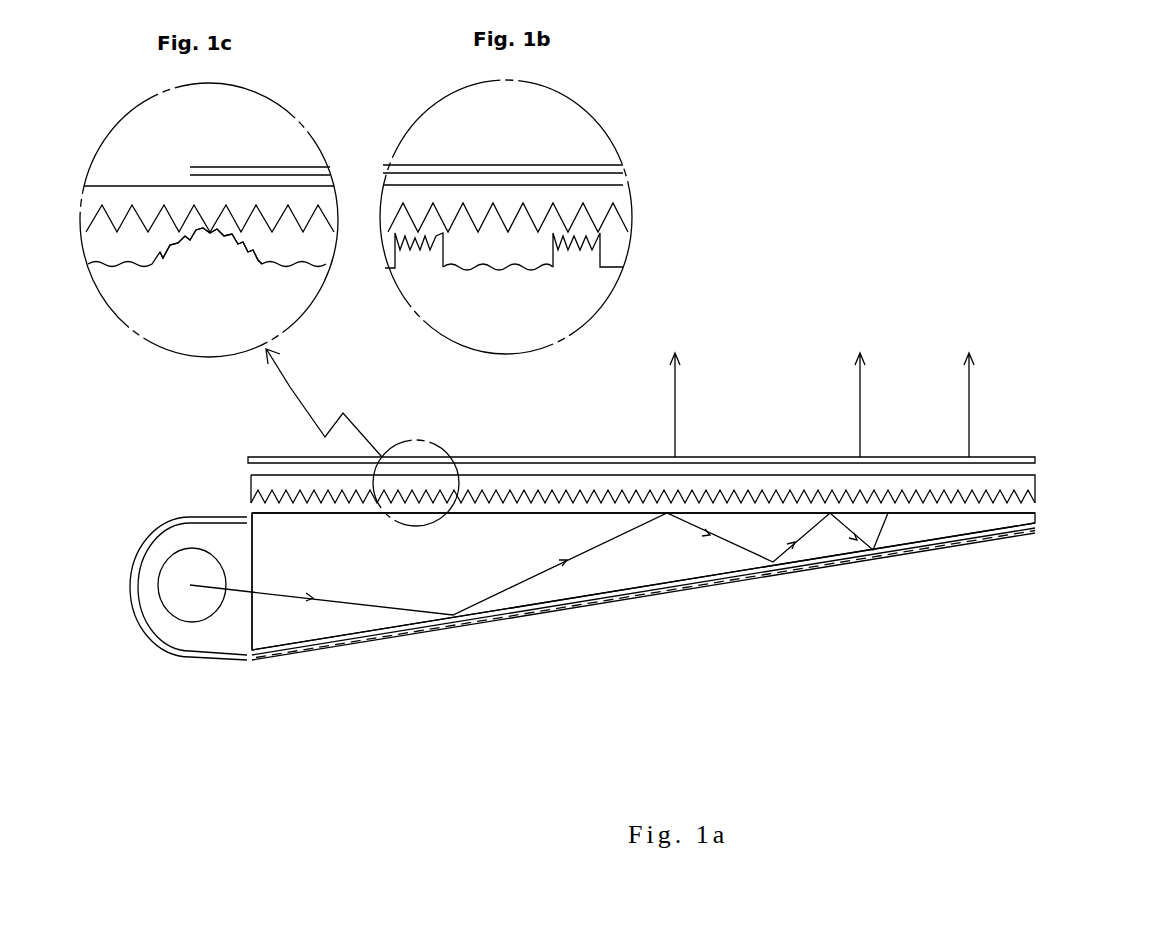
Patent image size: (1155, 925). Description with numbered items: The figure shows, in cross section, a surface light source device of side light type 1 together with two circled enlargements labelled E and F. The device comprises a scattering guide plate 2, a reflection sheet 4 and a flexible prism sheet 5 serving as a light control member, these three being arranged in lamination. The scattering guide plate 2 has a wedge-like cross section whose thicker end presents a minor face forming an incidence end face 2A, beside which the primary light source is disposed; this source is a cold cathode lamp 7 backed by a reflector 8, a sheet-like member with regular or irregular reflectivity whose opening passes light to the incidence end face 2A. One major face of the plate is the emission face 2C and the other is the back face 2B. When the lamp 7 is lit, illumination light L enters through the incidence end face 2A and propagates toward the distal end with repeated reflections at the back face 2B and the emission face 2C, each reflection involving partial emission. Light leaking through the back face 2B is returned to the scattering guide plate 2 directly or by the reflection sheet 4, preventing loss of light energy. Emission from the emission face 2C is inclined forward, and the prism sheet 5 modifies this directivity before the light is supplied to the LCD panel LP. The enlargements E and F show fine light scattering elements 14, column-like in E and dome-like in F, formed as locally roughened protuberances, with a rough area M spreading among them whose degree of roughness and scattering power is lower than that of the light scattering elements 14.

In FIG. 1A, the surface light source device of side light type 1 is at (759, 210).
In FIG. 1A, the scattering guide plate 2 is at (617, 575).
In FIG. 1A, the incidence end face 2A is at (253, 583).
In FIG. 1A, the back face 2B is at (498, 612).
In FIG. 1A, the emission face 2C is at (740, 513).
In FIG. 1A, the reflection sheet 4 is at (753, 578).
In FIG. 1A, the prism sheet 5 is at (1037, 483).
In FIG. 1C, the prism sheet 5 is at (180, 197).
In FIG. 1B, the prism sheet 5 is at (620, 193).
In FIG. 1A, the cold cathode lamp 7 is at (200, 615).
In FIG. 1A, the reflector 8 is at (145, 632).
In FIG. 1C, the light scattering elements 14 is at (207, 247).
In FIG. 1B, the light scattering elements 14 is at (420, 258).
In FIG. 1C, the rough area M is at (140, 265).
In FIG. 1B, the rough area M is at (507, 268).
In FIG. 1A, the illumination light L is at (368, 612).
In FIG. 1A, the LCD panel LP is at (1034, 457).
In FIG. 1C, the LCD panel LP is at (310, 167).
In FIG. 1B, the LCD panel LP is at (412, 167).
In FIG. 1A, the column-like protuberance example E is at (403, 438).
In FIG. 1A, the dome-like protuberance example F is at (324, 403).